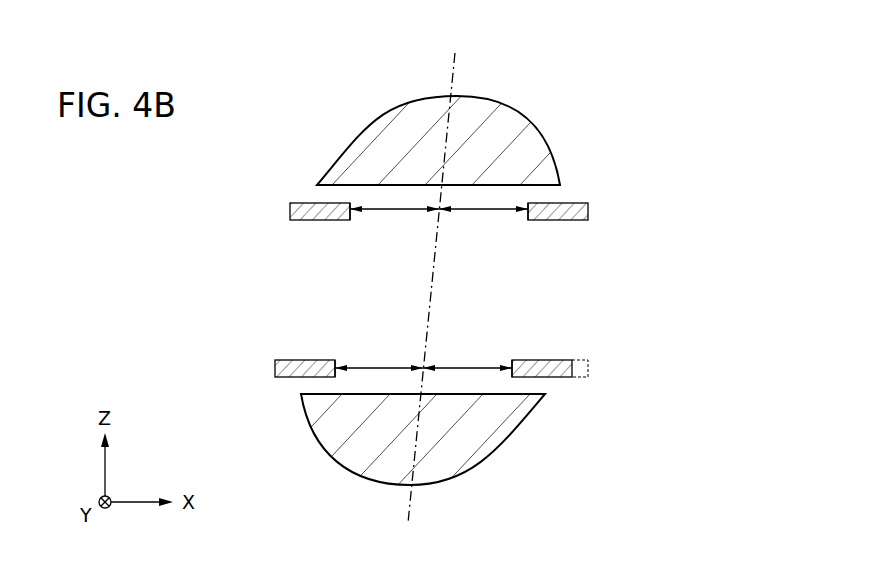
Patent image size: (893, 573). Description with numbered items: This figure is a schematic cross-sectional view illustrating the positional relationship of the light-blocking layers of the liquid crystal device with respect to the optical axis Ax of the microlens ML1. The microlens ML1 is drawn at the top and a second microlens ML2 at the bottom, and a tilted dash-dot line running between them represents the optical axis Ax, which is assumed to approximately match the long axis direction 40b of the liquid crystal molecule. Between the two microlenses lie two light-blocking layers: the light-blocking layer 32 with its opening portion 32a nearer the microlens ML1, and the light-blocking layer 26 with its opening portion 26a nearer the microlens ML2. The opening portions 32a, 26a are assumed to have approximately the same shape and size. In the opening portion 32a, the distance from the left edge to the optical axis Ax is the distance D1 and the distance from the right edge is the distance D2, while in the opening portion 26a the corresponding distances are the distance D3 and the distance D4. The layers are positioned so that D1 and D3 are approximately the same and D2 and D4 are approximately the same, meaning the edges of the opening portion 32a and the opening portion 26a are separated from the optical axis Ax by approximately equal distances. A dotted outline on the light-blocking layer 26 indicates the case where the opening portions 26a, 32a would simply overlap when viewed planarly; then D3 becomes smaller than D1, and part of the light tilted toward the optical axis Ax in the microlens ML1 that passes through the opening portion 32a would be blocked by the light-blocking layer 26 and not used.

The microlens ML1 is at (540, 142).
The microlens ML2 is at (480, 447).
The long axis direction 40b is at (450, 82).
The light-blocking layer 32 is at (290, 210).
The opening portion 32a is at (353, 221).
The light-blocking layer 26 is at (275, 369).
The opening portion 26a is at (345, 359).
The distance D1 is at (394, 212).
The distance D2 is at (483, 212).
The distance D3 is at (383, 365).
The distance D4 is at (474, 365).